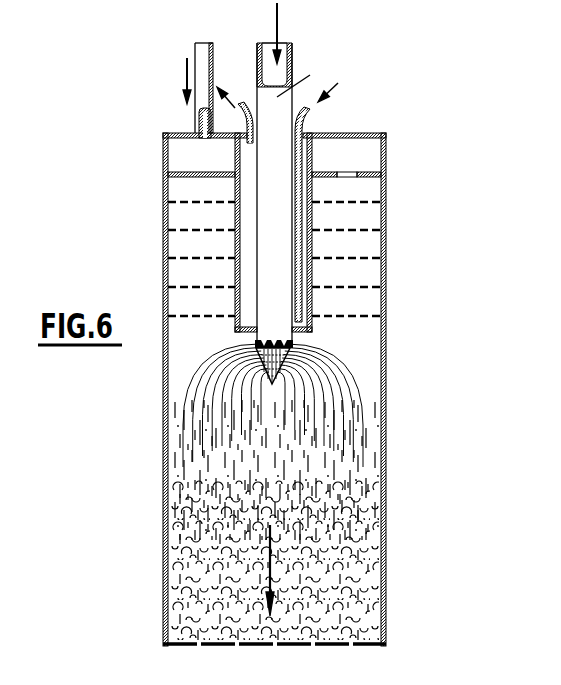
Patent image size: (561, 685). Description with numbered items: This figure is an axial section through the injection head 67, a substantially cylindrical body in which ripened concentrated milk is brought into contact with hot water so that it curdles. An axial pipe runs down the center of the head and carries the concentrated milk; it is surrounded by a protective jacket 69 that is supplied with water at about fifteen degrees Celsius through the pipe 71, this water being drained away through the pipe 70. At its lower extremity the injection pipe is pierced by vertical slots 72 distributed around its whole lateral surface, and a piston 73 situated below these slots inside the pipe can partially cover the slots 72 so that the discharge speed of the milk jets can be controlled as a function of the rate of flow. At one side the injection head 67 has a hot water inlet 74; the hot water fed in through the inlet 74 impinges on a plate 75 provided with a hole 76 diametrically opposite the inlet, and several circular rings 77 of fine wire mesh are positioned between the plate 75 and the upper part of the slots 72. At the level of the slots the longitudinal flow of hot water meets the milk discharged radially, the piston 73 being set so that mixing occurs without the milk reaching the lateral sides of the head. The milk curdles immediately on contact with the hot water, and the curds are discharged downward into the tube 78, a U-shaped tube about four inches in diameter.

The injection head 67 is at (408, 238).
The protective jacket 69 is at (252, 190).
The pipe 70 is at (237, 107).
The pipe 71 is at (306, 118).
The vertical slots 72 is at (290, 343).
The piston 73 is at (293, 370).
The hot water inlet 74 is at (205, 60).
The plate 75 is at (195, 170).
The hole 76 is at (345, 172).
The circular rings 77 is at (188, 316).
The tube 78 is at (386, 587).